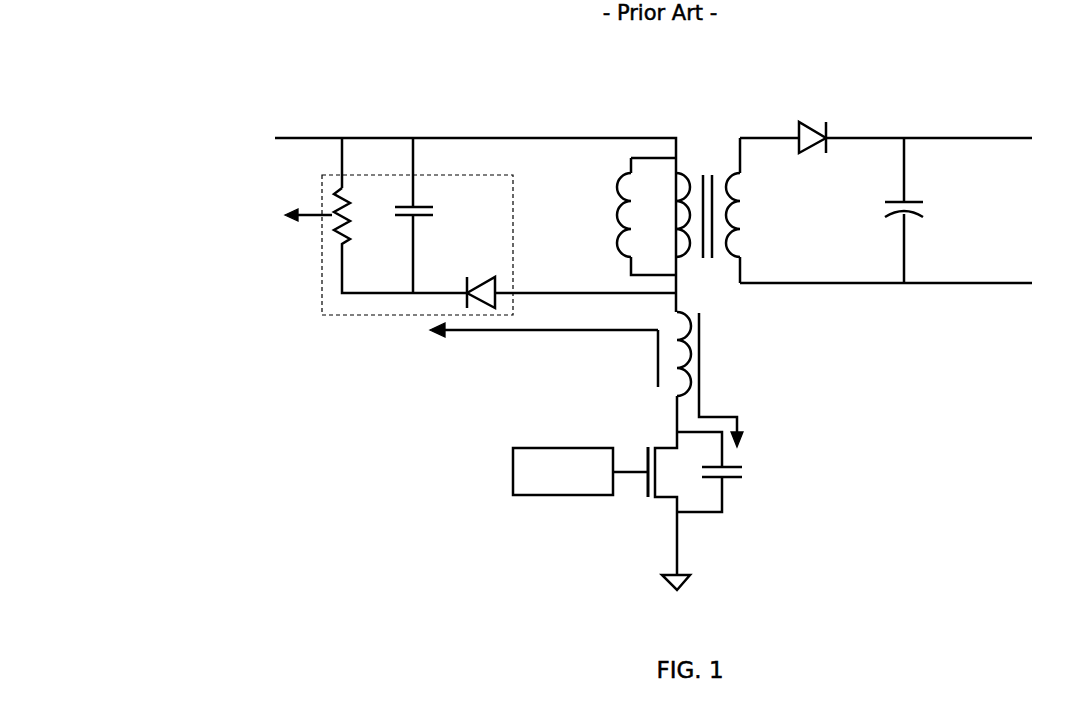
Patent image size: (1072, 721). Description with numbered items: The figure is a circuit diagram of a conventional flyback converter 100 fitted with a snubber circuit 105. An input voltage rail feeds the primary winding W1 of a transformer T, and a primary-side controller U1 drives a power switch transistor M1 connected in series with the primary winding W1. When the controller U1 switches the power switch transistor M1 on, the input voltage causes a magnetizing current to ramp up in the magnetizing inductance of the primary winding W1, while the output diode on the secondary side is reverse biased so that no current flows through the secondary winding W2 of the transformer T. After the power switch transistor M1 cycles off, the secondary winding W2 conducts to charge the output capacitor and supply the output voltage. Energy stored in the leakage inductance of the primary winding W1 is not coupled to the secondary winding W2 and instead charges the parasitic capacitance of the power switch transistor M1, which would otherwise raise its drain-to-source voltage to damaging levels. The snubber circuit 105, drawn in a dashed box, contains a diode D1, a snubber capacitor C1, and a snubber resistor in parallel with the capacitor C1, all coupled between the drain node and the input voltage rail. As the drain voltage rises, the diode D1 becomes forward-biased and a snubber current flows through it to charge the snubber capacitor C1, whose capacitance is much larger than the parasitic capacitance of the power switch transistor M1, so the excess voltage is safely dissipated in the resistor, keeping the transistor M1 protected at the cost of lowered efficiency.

The flyback converter 100 is at (206, 75).
The snubber circuit 105 is at (342, 317).
The snubber capacitor C1 is at (432, 215).
The diode D1 is at (571, 278).
The primary winding W1 is at (665, 215).
The secondary winding W2 is at (755, 215).
The transformer T is at (704, 188).
The power switch transistor M1 is at (645, 485).
The primary-side controller U1 is at (563, 471).